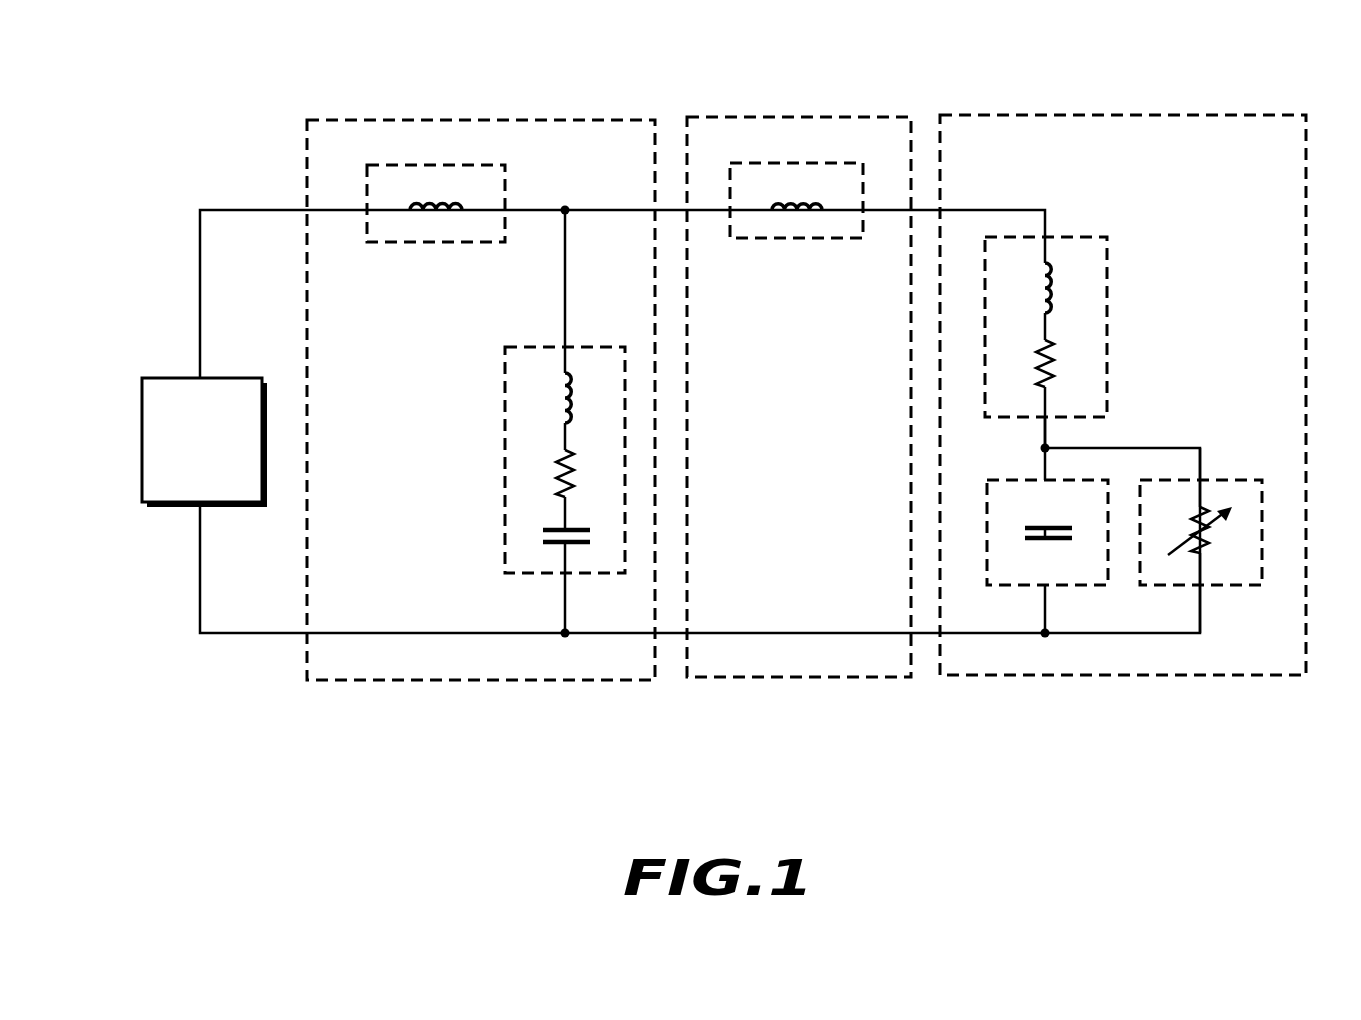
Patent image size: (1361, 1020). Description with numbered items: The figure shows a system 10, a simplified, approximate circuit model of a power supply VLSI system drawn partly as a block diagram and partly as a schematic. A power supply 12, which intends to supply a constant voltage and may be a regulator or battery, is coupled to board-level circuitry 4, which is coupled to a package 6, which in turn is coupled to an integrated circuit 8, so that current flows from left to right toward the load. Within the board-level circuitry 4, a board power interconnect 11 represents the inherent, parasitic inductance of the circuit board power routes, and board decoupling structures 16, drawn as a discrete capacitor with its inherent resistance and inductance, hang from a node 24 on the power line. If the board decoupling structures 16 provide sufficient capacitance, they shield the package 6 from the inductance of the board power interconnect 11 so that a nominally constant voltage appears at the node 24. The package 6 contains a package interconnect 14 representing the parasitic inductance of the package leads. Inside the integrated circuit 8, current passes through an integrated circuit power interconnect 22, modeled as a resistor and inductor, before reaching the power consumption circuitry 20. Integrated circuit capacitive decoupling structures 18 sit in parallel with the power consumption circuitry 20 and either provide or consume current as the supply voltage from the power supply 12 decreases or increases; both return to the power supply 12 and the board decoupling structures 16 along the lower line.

The system 10 is at (1278, 65).
The board-level circuitry 4 is at (470, 680).
The package 6 is at (790, 677).
The integrated circuit 8 is at (1100, 675).
The power supply 12 is at (172, 378).
The board power interconnect 11 is at (422, 243).
The package interconnect 14 is at (782, 240).
The board decoupling structures 16 is at (505, 522).
The integrated circuit capacitive decoupling structures 18 is at (987, 503).
The power consumption circuitry 20 is at (1237, 480).
The integrated circuit power interconnect 22 is at (1080, 237).
The node 24 is at (571, 192).